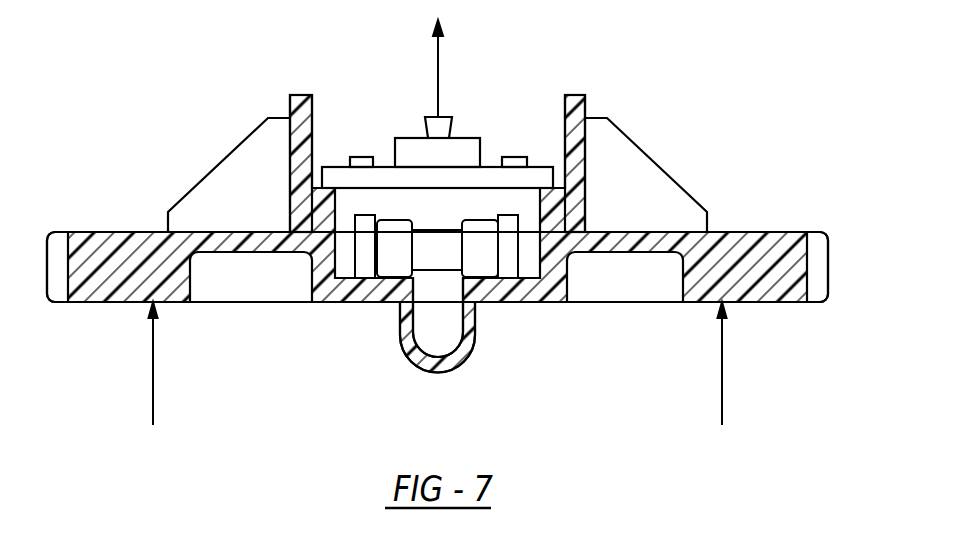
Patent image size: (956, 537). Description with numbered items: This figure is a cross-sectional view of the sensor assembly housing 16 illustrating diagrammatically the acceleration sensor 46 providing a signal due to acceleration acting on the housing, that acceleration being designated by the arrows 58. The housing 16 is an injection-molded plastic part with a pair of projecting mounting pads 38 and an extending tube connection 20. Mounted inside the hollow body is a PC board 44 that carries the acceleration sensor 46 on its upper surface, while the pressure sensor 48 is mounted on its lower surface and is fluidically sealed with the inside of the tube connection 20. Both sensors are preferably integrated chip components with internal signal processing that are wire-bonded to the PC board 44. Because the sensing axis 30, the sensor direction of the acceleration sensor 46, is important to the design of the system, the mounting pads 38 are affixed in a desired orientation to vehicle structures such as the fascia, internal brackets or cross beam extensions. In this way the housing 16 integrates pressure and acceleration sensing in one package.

The sensor assembly housing 16 is at (643, 148).
The tube connection 20 is at (443, 370).
The sensing axis 30 is at (565, 124).
The mounting pads 38 is at (98, 232).
The PC board 44 is at (330, 167).
The acceleration sensor 46 is at (466, 138).
The pressure sensor 48 is at (418, 208).
The arrows 58 is at (438, 70).